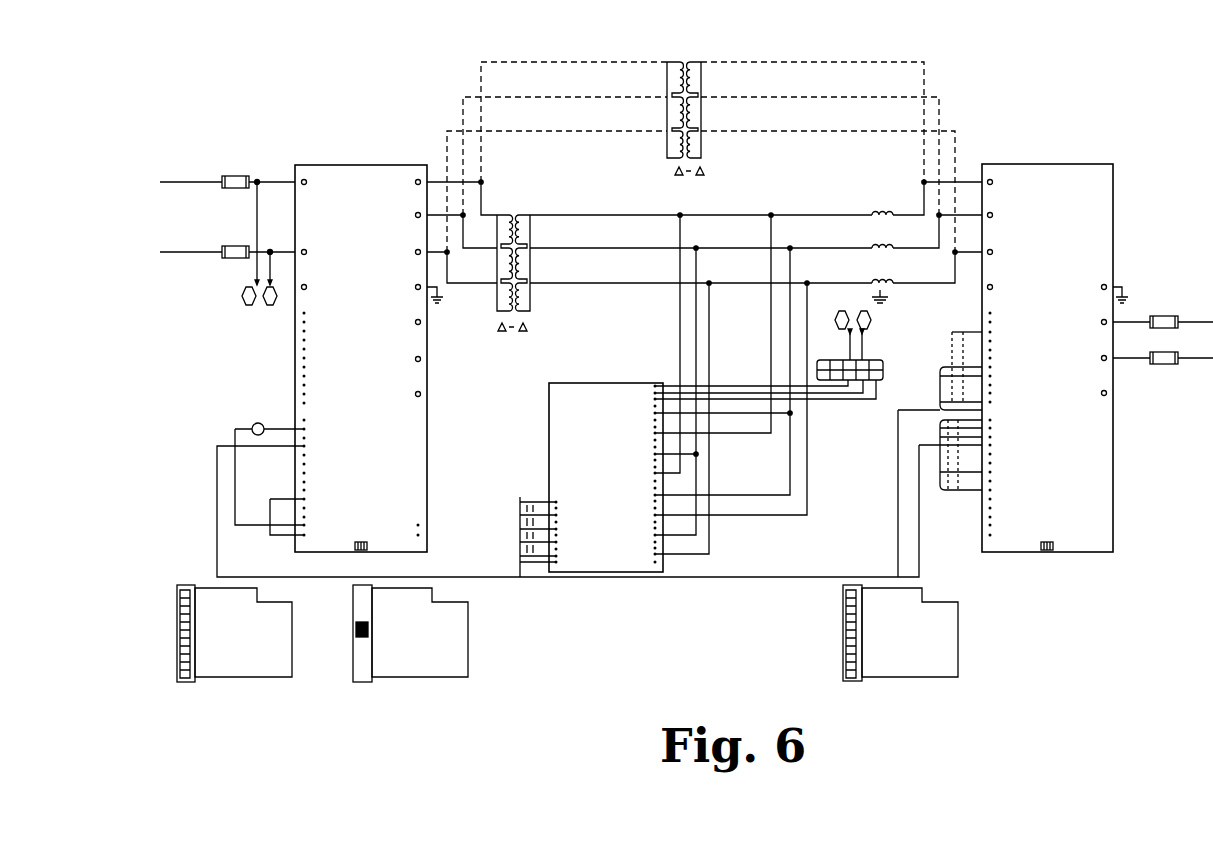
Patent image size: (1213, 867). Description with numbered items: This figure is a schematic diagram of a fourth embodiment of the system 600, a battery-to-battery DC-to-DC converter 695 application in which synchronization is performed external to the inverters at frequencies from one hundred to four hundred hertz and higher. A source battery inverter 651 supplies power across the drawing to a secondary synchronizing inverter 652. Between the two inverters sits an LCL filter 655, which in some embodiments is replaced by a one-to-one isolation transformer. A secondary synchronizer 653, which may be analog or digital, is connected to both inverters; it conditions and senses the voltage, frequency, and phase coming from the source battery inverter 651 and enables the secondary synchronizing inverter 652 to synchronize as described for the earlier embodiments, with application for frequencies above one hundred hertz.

The power system 600 is at (1084, 71).
The battery-to-battery DC-to-DC converter 695 is at (255, 123).
The LCL filter 655 is at (659, 47).
The source battery inverter 651 is at (350, 283).
The secondary synchronizing inverter 652 is at (1036, 299).
The secondary synchronizer 653 is at (595, 444).